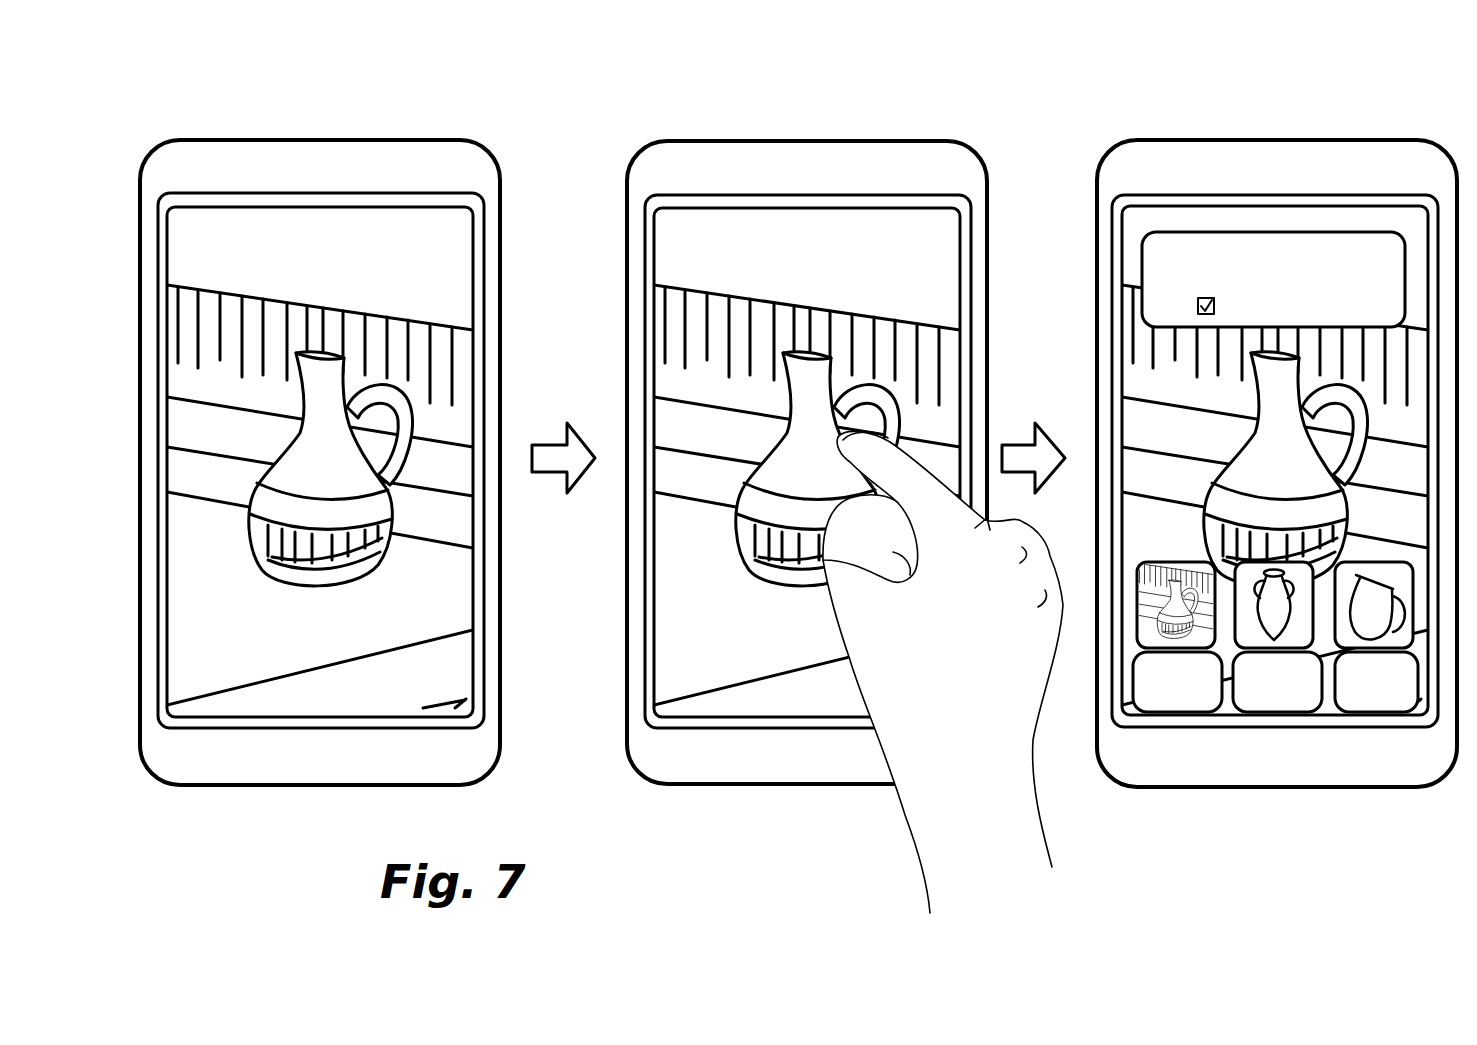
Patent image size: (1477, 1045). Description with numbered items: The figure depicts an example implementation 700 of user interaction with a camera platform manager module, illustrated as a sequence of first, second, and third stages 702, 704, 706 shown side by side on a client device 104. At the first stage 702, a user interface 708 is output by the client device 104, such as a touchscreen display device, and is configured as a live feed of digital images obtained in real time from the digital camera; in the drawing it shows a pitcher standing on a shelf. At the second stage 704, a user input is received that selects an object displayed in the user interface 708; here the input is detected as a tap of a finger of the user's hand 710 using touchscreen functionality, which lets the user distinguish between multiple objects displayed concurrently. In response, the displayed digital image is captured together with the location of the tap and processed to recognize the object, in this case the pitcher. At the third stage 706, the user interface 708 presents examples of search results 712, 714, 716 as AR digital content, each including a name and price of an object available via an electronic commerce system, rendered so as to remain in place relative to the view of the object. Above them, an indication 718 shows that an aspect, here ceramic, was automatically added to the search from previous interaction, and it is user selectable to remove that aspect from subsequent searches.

The example implementation 700 is at (175, 86).
The first stage 702 is at (170, 126).
The second stage 704 is at (653, 121).
The third stage 706 is at (1150, 129).
The client device 104 is at (318, 148).
The user interface 708 is at (368, 207).
The user's hand 710 is at (943, 672).
The search result 712 is at (1183, 712).
The search result 714 is at (1280, 712).
The search result 716 is at (1368, 712).
The indication 718 is at (1273, 279).